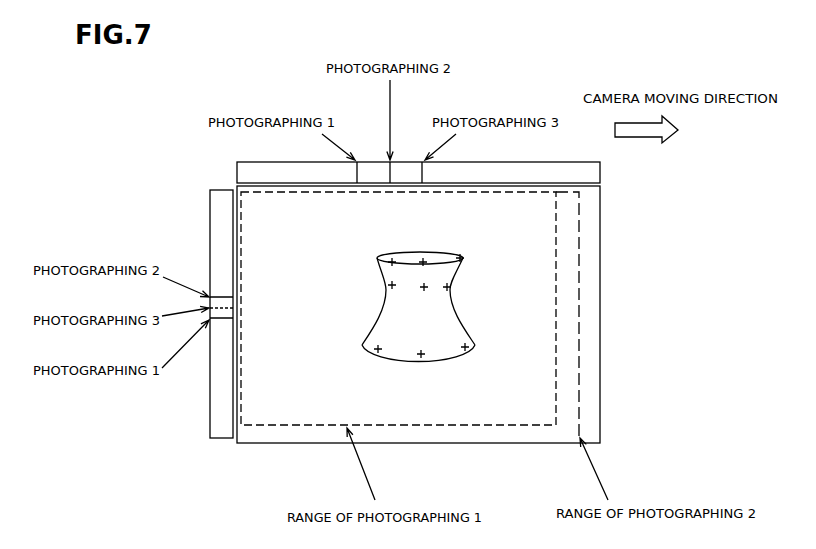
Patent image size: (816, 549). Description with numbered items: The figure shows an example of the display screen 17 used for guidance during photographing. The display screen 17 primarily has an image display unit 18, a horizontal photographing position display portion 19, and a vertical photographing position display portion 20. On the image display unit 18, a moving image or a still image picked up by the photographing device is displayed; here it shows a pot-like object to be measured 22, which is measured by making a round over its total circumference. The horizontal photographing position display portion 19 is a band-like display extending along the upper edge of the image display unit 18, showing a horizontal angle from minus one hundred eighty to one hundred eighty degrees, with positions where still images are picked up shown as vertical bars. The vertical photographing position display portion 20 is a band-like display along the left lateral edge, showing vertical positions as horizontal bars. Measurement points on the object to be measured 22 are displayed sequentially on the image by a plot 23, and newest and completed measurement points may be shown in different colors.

The display screen 17 is at (563, 158).
The image display unit 18 is at (297, 373).
The horizontal photographing position display portion 19 is at (600, 172).
The vertical photographing position display portion 20 is at (212, 440).
The object to be measured 22 is at (378, 291).
The plot 23 is at (375, 345).